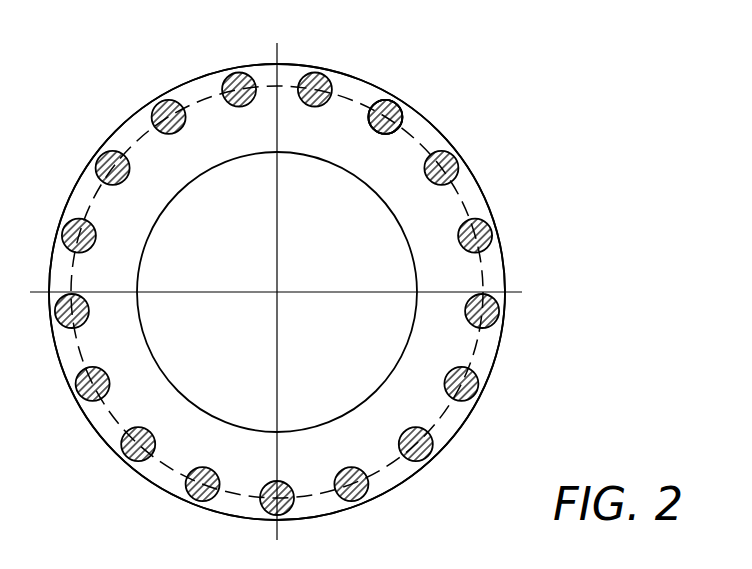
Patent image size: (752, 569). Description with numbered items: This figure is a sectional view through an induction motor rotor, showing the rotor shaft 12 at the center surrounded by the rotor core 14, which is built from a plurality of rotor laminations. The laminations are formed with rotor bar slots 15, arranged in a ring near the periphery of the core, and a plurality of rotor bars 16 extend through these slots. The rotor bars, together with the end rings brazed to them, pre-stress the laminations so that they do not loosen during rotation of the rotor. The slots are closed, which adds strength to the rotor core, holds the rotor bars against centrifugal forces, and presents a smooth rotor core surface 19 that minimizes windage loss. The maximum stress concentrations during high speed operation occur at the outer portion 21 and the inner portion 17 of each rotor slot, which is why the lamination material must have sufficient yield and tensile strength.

The rotor shaft 12 is at (345, 250).
The rotor core 14 is at (447, 131).
The rotor bar slots 15 is at (194, 91).
The rotor bars 16 is at (392, 99).
The inner portion of rotor slot 17 is at (372, 122).
The rotor core surface 19 is at (487, 192).
The outer portion of rotor slot 21 is at (412, 104).